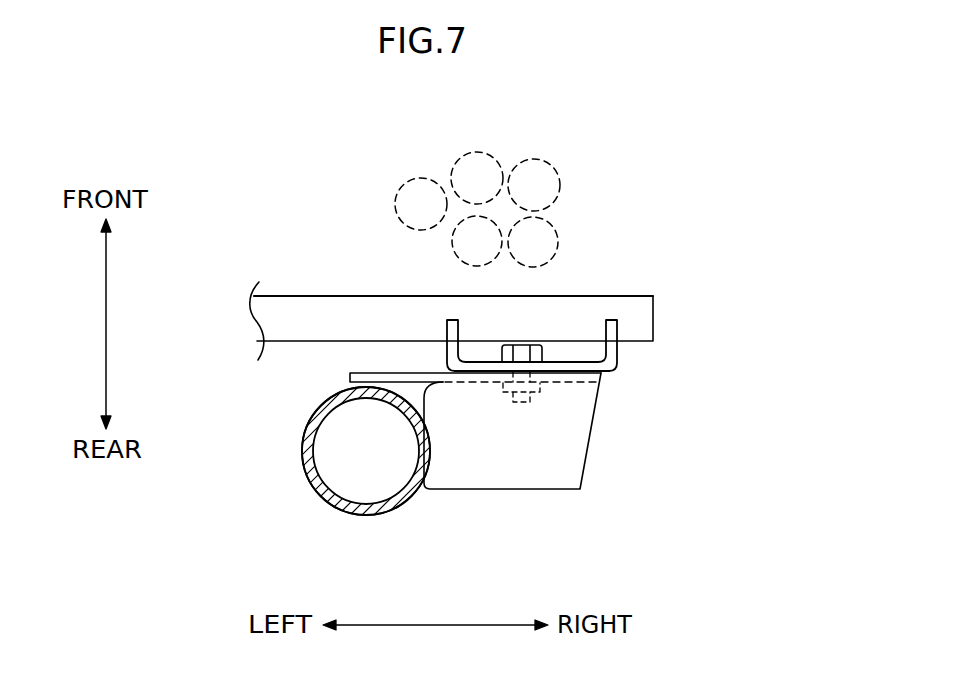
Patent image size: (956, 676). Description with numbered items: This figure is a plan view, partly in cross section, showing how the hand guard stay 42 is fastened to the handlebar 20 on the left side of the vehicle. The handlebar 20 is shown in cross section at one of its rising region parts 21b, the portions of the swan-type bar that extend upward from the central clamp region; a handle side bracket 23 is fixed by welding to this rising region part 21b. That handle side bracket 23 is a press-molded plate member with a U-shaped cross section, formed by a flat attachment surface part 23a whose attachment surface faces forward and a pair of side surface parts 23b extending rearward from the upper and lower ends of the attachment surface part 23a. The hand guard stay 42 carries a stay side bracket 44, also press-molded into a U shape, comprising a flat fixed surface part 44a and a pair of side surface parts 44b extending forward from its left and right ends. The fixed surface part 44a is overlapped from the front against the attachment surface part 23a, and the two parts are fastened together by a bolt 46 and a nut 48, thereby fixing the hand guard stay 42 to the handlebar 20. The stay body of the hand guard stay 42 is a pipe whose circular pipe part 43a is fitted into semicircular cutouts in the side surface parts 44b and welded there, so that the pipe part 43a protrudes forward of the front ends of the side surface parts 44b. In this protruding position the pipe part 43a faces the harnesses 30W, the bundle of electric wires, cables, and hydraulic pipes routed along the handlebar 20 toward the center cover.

The harnesses 30W is at (526, 142).
The hand guard stay 42 is at (286, 287).
The pipe part 43a is at (358, 296).
The bracket 44 is at (519, 352).
The fixed surface part 44a is at (566, 354).
The side surface parts 44b is at (447, 332).
The bolt 46 is at (531, 345).
The nut 48 is at (511, 402).
The support member 23 is at (566, 431).
The attachment surface part 23a is at (577, 383).
The side surface parts 23b is at (560, 447).
The handlebar 20 is at (298, 492).
The rising region parts 21b is at (299, 449).